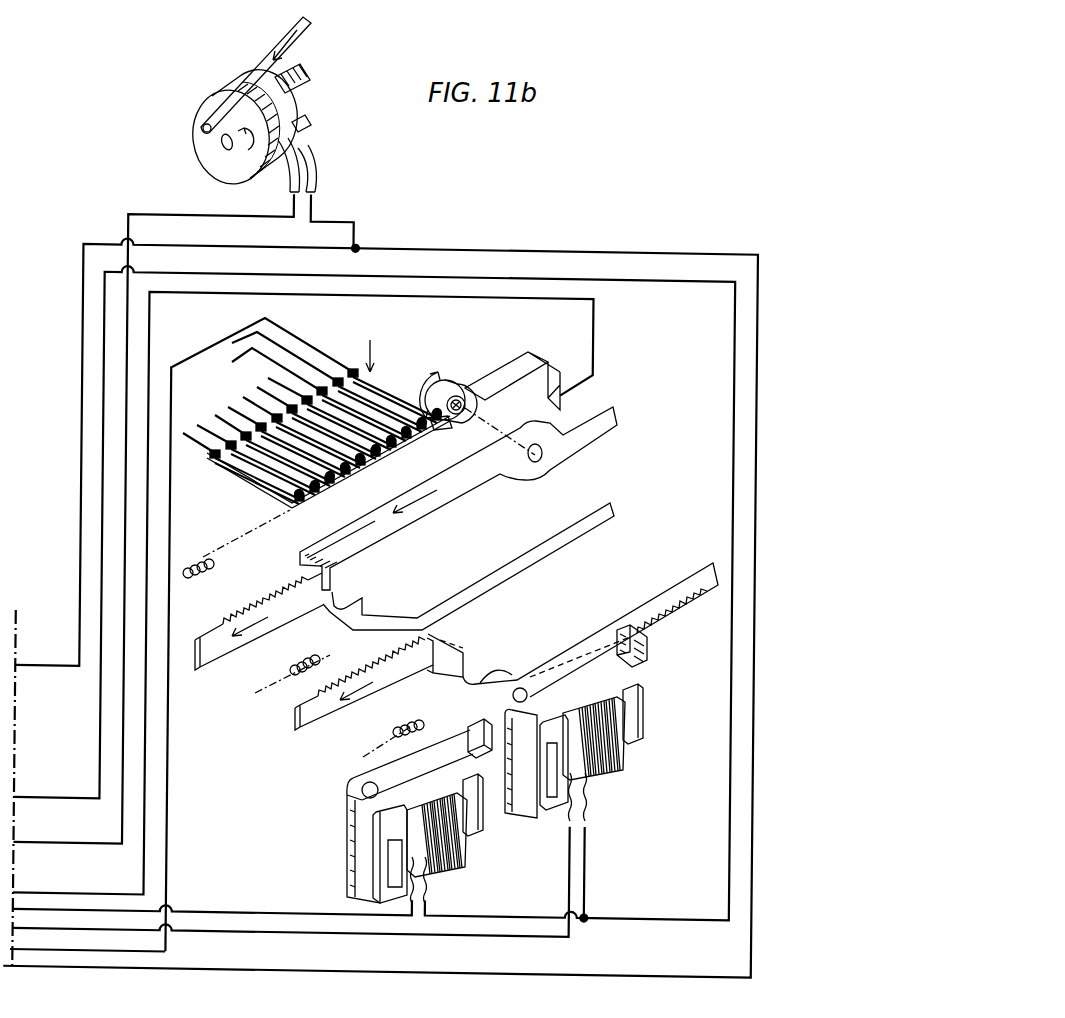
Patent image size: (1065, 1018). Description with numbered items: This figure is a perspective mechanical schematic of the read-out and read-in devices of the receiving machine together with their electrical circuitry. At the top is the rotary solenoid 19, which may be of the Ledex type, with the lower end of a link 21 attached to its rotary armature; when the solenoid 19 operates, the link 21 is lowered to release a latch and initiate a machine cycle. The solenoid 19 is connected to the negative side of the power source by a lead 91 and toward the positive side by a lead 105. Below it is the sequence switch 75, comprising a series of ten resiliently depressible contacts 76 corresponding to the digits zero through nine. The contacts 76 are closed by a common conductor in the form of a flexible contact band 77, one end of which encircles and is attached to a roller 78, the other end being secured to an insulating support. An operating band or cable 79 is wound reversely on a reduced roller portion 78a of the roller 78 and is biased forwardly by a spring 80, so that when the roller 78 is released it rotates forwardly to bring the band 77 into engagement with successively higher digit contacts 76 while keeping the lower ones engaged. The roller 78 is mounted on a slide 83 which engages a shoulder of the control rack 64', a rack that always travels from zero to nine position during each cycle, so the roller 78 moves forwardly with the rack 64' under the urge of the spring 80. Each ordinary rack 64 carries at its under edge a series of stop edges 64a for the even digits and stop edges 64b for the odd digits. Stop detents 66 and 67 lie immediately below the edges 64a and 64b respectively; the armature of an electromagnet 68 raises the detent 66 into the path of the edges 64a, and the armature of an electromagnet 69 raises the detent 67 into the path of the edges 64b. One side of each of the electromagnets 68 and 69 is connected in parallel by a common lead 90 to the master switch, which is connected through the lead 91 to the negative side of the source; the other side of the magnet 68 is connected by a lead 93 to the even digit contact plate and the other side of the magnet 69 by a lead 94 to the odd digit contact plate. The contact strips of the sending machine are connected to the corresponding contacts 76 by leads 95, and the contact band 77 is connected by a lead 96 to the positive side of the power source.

The rotary solenoid 19 is at (300, 113).
The link 21 is at (262, 58).
The lead 105 is at (181, 214).
The lead 91 is at (444, 245).
The common lead 90 is at (70, 798).
The lead 93 is at (262, 896).
The lead 94 is at (276, 931).
The leads 95 is at (171, 945).
The lead 96 is at (173, 764).
The sequence switch 75 is at (366, 344).
The contacts 76 is at (281, 465).
The flexible contact band 77 is at (430, 360).
The roller 78 is at (444, 376).
The reduced roller portion 78a is at (462, 406).
The operating band or cable 79 is at (442, 430).
The slide 83 is at (570, 460).
The spring 80 is at (208, 568).
The control rack 64' is at (404, 586).
The rack 64 is at (506, 646).
The stop edges 64a is at (470, 722).
The stop edges 64b is at (678, 614).
The stop detent 67 is at (652, 654).
The stop detent 66 is at (420, 754).
The electromagnet 68 is at (440, 872).
The electromagnet 69 is at (620, 780).